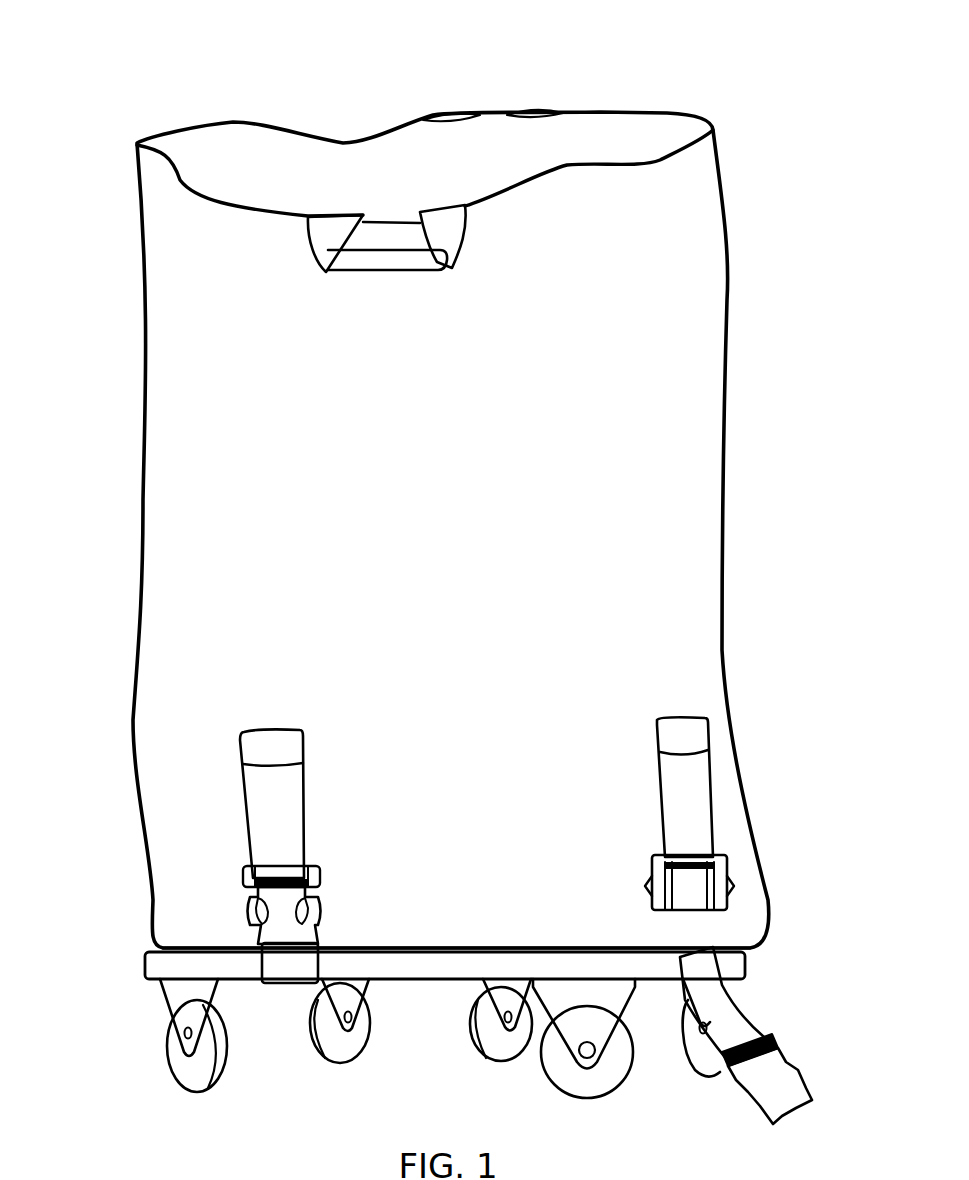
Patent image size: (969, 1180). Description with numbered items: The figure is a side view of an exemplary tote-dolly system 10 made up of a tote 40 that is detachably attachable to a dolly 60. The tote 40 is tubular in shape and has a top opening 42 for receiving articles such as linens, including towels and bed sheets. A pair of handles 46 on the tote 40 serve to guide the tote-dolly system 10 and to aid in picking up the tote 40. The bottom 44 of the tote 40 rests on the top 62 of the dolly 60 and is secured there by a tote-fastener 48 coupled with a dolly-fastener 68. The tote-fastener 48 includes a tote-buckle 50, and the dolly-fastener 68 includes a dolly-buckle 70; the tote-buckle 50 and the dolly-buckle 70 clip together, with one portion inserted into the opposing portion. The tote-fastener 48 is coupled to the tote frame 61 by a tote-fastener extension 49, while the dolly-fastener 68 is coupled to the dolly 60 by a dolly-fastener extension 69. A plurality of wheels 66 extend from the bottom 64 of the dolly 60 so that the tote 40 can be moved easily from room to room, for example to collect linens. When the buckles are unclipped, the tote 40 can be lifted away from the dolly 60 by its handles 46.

The tote-dolly system 10 is at (152, 118).
The tote 40 is at (688, 285).
The top opening 42 is at (285, 180).
The bottom 44 is at (758, 958).
The handles 46 is at (390, 258).
The tote-fastener 48 is at (310, 860).
The tote-fastener extension 49 is at (268, 818).
The tote-buckle 50 is at (245, 864).
The dolly 60 is at (465, 960).
The tote frame 61 is at (165, 972).
The top 62 is at (158, 950).
The bottom 64 is at (408, 985).
The wheels 66 is at (186, 1064).
The dolly-fastener 68 is at (318, 905).
The dolly-fastener extension 69 is at (306, 965).
The dolly-buckle 70 is at (270, 912).